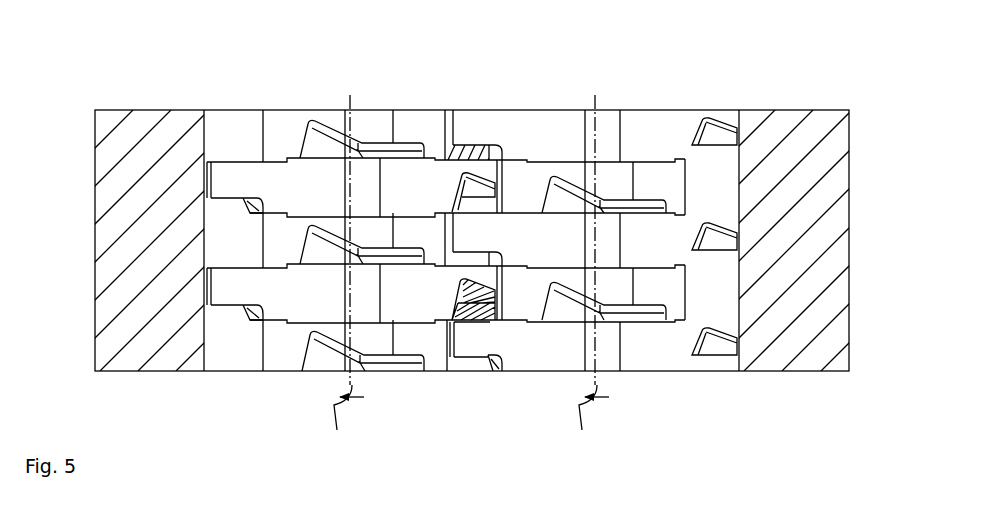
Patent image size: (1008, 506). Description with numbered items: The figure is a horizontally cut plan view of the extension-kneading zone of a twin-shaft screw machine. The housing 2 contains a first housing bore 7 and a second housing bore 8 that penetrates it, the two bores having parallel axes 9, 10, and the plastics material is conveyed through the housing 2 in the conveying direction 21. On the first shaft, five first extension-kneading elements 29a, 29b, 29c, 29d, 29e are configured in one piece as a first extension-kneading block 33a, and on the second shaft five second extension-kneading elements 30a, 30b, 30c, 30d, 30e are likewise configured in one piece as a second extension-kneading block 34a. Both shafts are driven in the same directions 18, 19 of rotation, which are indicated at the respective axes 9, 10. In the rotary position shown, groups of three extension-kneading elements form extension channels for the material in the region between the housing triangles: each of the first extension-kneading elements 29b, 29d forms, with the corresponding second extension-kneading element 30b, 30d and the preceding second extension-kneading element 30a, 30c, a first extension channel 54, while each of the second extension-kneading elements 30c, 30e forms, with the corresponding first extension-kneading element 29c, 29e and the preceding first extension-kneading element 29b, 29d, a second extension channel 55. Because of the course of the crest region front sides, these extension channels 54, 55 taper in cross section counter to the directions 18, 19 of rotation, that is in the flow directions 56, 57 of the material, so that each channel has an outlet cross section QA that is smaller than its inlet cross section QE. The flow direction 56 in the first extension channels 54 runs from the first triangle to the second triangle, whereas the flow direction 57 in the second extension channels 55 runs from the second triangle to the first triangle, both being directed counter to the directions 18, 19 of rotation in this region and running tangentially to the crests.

The housing 2 is at (758, 104).
The first housing bore 7 is at (232, 373).
The second housing bore 8 is at (715, 373).
The axis 9 is at (345, 418).
The axis 10 is at (586, 418).
The direction of rotation 18 is at (361, 397).
The direction of rotation 19 is at (606, 397).
The conveying direction 21 is at (78, 184).
The first extension-kneading element 29a is at (275, 338).
The first extension-kneading element 29b is at (225, 281).
The first extension-kneading element 29c is at (275, 240).
The first extension-kneading element 29d is at (225, 182).
The first extension-kneading element 29e is at (275, 138).
The second extension-kneading element 30a is at (745, 333).
The second extension-kneading element 30b is at (672, 290).
The second extension-kneading element 30c is at (745, 230).
The second extension-kneading element 30d is at (672, 185).
The second extension-kneading element 30e is at (745, 125).
The first extension-kneading block 33a is at (323, 104).
The second extension-kneading block 34a is at (597, 104).
The first extension channel 54 is at (494, 144).
The second extension channel 55 is at (445, 146).
The flow direction 56 is at (472, 206).
The flow direction 57 is at (474, 258).
The outlet cross section QA is at (481, 144).
The inlet cross section QE is at (479, 305).